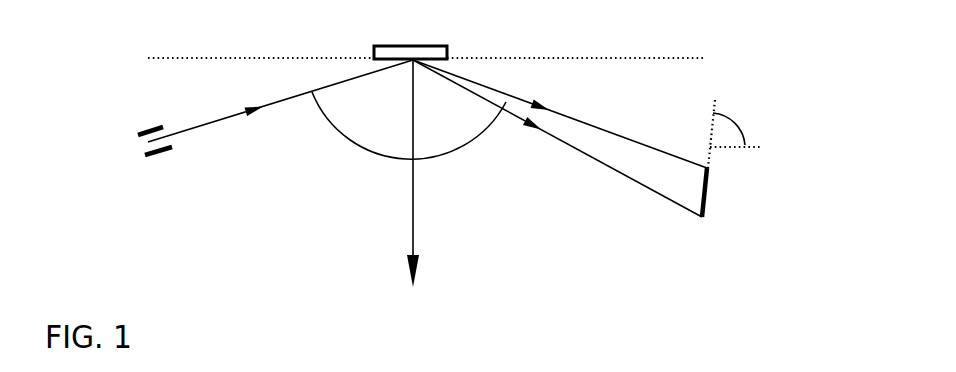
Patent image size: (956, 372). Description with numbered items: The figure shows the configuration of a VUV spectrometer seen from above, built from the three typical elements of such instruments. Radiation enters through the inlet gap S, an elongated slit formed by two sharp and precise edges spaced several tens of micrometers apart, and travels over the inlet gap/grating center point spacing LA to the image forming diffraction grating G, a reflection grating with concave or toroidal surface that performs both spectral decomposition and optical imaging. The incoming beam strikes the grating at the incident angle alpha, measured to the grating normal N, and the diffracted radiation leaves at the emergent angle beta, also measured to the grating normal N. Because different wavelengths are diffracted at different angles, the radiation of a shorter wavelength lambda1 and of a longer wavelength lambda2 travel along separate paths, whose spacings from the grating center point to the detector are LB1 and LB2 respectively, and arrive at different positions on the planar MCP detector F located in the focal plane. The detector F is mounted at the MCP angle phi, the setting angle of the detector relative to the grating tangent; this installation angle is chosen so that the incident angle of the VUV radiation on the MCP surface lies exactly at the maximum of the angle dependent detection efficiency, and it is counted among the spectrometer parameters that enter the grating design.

The diffraction grating G is at (427, 39).
The inlet gap/grating center point spacing LA is at (280, 101).
The inlet gap S is at (110, 161).
The grating normal N is at (366, 173).
The incident angle alpha is at (382, 124).
The emergent angle beta is at (460, 124).
The spacing of grating center point to detector LB1 is at (560, 114).
The spacing of grating center point to detector LB2 is at (557, 138).
The detector F is at (745, 218).
The MCP angle phi is at (796, 134).
The wavelength lambda1 is at (735, 179).
The wavelength lambda2 is at (750, 224).